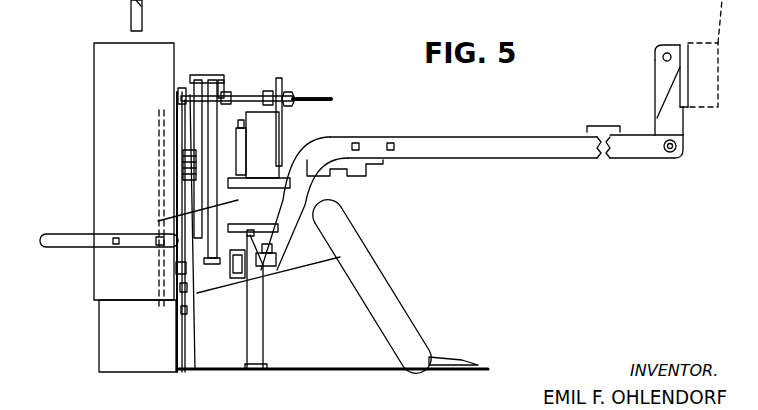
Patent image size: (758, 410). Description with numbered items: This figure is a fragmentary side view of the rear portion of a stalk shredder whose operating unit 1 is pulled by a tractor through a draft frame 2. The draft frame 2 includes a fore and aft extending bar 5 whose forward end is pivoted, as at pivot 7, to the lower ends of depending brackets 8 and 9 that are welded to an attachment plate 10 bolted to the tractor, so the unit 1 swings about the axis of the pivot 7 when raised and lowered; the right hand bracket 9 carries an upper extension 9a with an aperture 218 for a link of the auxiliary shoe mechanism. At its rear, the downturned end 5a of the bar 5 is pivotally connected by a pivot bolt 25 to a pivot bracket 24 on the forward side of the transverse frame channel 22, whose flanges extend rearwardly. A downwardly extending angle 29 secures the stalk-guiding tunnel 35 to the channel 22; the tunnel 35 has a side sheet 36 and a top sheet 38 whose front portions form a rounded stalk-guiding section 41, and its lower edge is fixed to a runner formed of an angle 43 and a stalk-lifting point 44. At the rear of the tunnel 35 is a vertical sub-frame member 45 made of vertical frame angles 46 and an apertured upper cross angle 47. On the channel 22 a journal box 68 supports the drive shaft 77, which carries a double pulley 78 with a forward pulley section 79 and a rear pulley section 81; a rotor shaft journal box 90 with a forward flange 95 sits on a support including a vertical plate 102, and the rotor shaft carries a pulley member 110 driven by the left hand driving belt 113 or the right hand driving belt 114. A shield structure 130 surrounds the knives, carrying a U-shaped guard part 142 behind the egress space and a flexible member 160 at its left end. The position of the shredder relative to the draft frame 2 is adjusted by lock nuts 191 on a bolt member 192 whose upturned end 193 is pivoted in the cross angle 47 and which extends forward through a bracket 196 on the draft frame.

The operating unit 1 is at (76, 146).
The draft frame 2 is at (529, 132).
The bar 5 is at (464, 142).
The downturned end 5a is at (275, 238).
The pivot 7 is at (682, 152).
The depending bracket 8 is at (677, 122).
The depending bracket 9 is at (657, 88).
The upper extension 9a is at (654, 51).
The attachment plate 10 is at (686, 50).
The channel 22 is at (233, 279).
The pivot bracket 24 is at (266, 268).
The pivot bolt 25 is at (270, 268).
The angle 29 is at (258, 333).
The stalk-guiding tunnel 35 is at (397, 282).
The side sheet 36 is at (326, 350).
The top sheet 38 is at (302, 265).
The rounded stalk-guiding section 41 is at (346, 232).
The angle 43 is at (283, 371).
The stalk-lifting point 44 is at (454, 362).
The sub-frame member 45 is at (170, 336).
The vertical frame angle 46 is at (191, 328).
The upper cross angle 47 is at (178, 100).
The journal box 68 is at (255, 160).
The drive shaft 77 is at (237, 148).
The double pulley 78 is at (231, 92).
The forward pulley section 79 is at (225, 80).
The rear pulley section 81 is at (195, 76).
The rotor shaft journal box 90 is at (163, 219).
The forward flange 95 is at (284, 222).
The plate 102 is at (176, 268).
The pulley member 110 is at (186, 186).
The left hand driving belt 113 is at (199, 76).
The right hand driving belt 114 is at (213, 77).
The shield structure 130 is at (93, 71).
The U-shaped guard part 142 is at (60, 240).
The flexible member 160 is at (96, 358).
The lock nut 191 is at (289, 92).
The bolt member 192 is at (266, 91).
The upturned end 193 is at (184, 86).
The bracket 196 is at (283, 125).
The aperture 218 is at (667, 51).